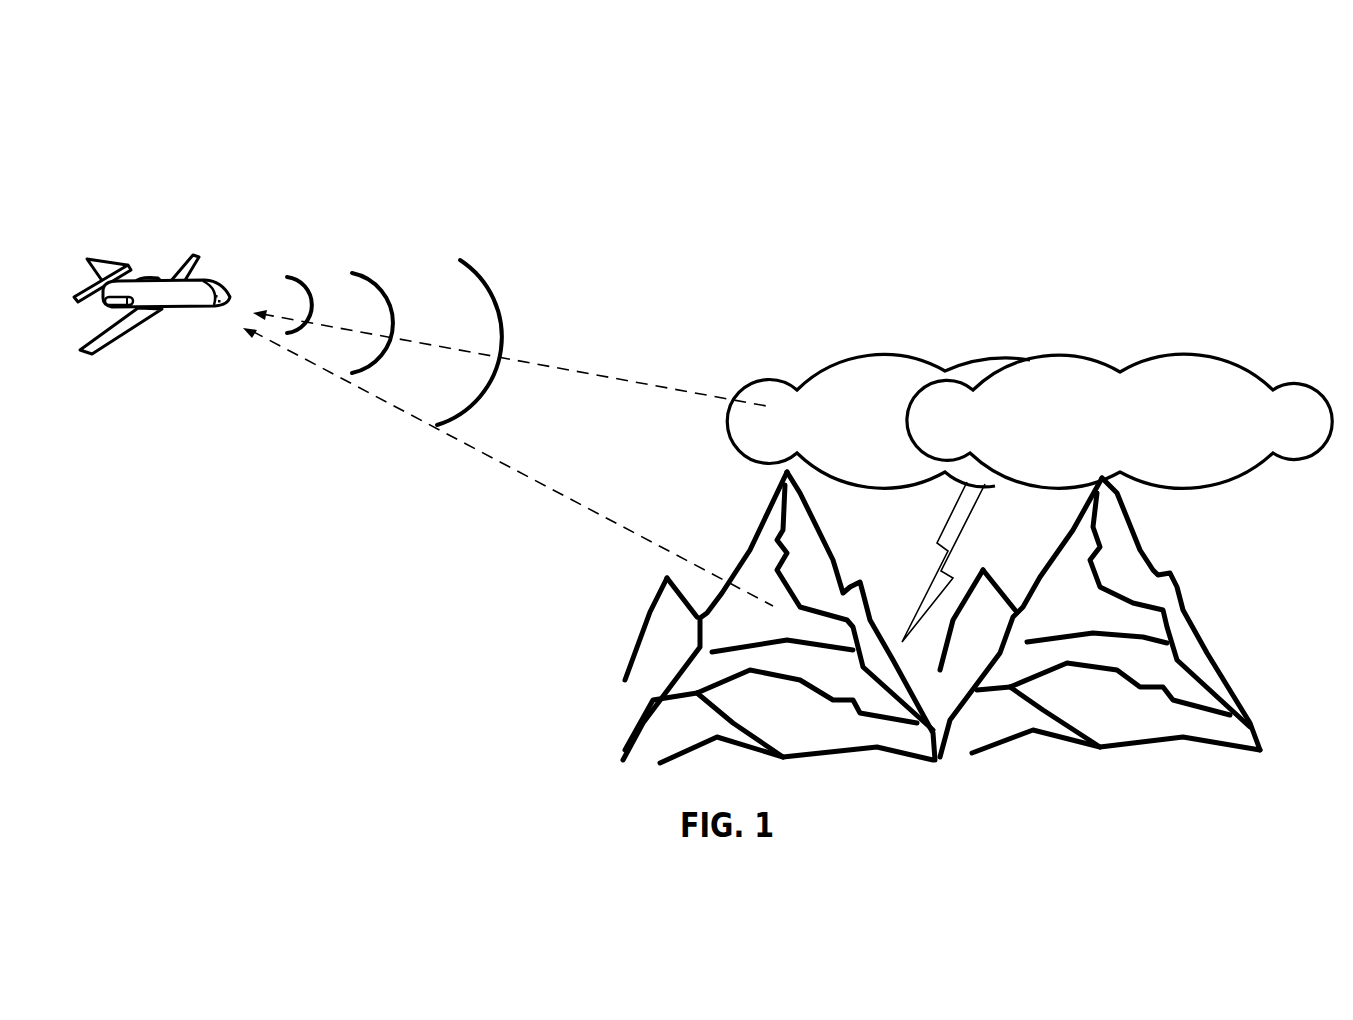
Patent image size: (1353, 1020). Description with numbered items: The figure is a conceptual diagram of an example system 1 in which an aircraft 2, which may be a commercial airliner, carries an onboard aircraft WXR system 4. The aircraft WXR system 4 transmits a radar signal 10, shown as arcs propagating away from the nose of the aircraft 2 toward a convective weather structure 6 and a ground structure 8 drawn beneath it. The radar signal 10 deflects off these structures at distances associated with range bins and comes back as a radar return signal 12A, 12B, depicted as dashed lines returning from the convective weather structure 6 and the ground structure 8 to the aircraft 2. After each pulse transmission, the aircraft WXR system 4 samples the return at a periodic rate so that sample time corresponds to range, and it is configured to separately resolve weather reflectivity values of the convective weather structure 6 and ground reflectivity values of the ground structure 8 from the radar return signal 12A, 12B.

The aircraft weather radar system environment 1 is at (1226, 128).
The aircraft 2 is at (220, 223).
The aircraft WXR system 4 is at (284, 209).
The convective weather structure 6 is at (995, 433).
The ground structure 8 is at (906, 591).
The radar signal 10 is at (483, 279).
The radar return signal 12A is at (543, 370).
The radar return signal 12B is at (478, 452).